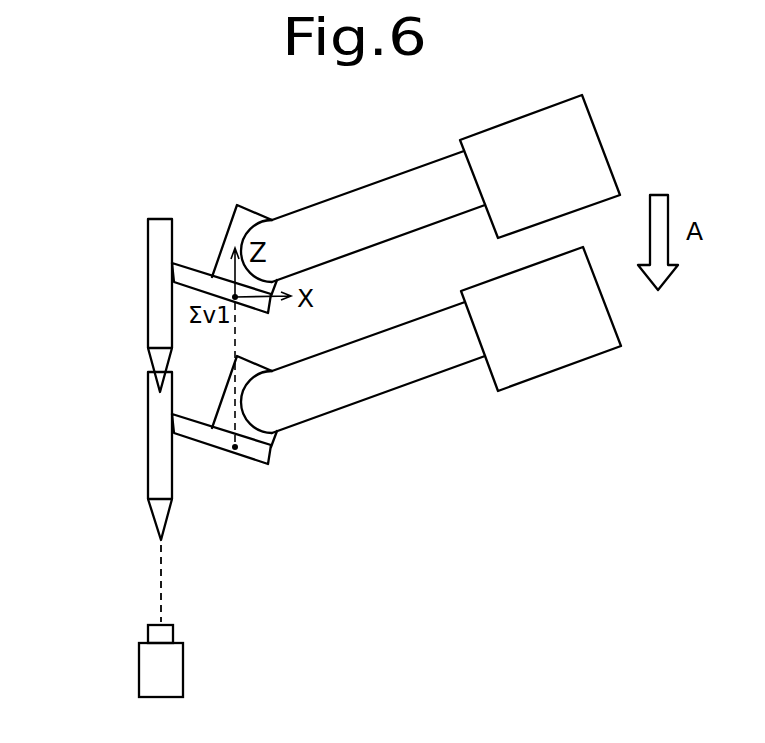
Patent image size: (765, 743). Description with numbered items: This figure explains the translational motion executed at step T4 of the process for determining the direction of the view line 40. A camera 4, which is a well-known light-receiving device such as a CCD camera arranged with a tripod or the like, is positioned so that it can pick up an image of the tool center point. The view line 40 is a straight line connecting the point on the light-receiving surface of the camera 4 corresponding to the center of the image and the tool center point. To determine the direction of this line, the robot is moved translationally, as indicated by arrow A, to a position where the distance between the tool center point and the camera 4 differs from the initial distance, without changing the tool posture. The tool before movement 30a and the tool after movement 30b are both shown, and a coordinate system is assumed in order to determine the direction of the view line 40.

The tool before movement 30a is at (155, 278).
The tool after movement 30b is at (155, 440).
The view line 40 is at (162, 593).
The camera 4 is at (150, 670).